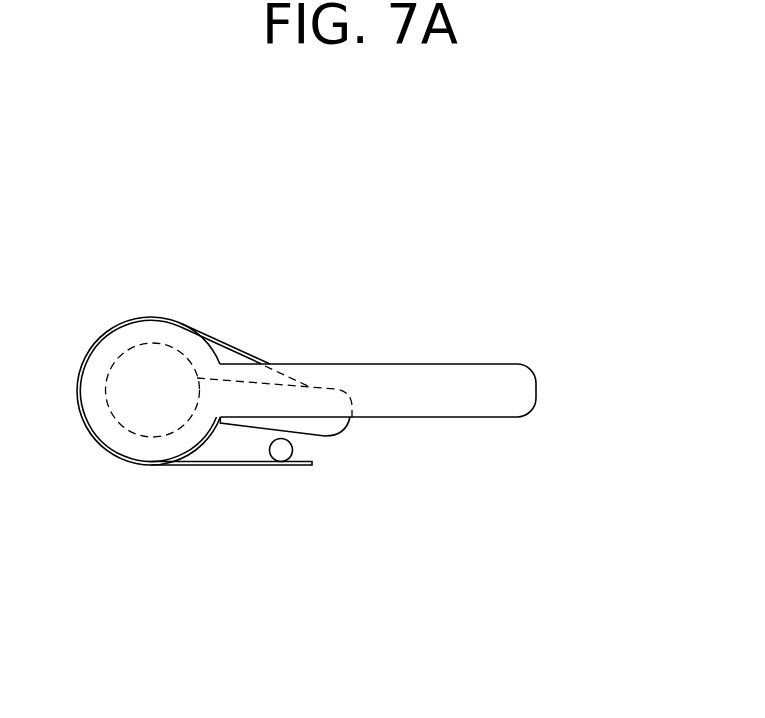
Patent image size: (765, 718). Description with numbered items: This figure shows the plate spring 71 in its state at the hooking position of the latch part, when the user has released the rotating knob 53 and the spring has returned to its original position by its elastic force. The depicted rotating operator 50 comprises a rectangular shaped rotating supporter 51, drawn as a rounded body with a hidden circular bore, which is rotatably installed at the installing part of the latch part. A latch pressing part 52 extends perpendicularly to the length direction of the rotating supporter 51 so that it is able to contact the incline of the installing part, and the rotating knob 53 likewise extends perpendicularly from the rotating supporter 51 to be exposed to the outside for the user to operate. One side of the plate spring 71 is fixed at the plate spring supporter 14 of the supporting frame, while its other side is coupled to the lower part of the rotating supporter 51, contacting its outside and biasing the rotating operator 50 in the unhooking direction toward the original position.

The rotating operator 50 is at (313, 283).
The rotating supporter 51 is at (151, 437).
The latch pressing part 52 is at (345, 436).
The rotating knob 53 is at (473, 370).
The plate spring 71 is at (228, 466).
The plate spring supporter 14 is at (283, 453).